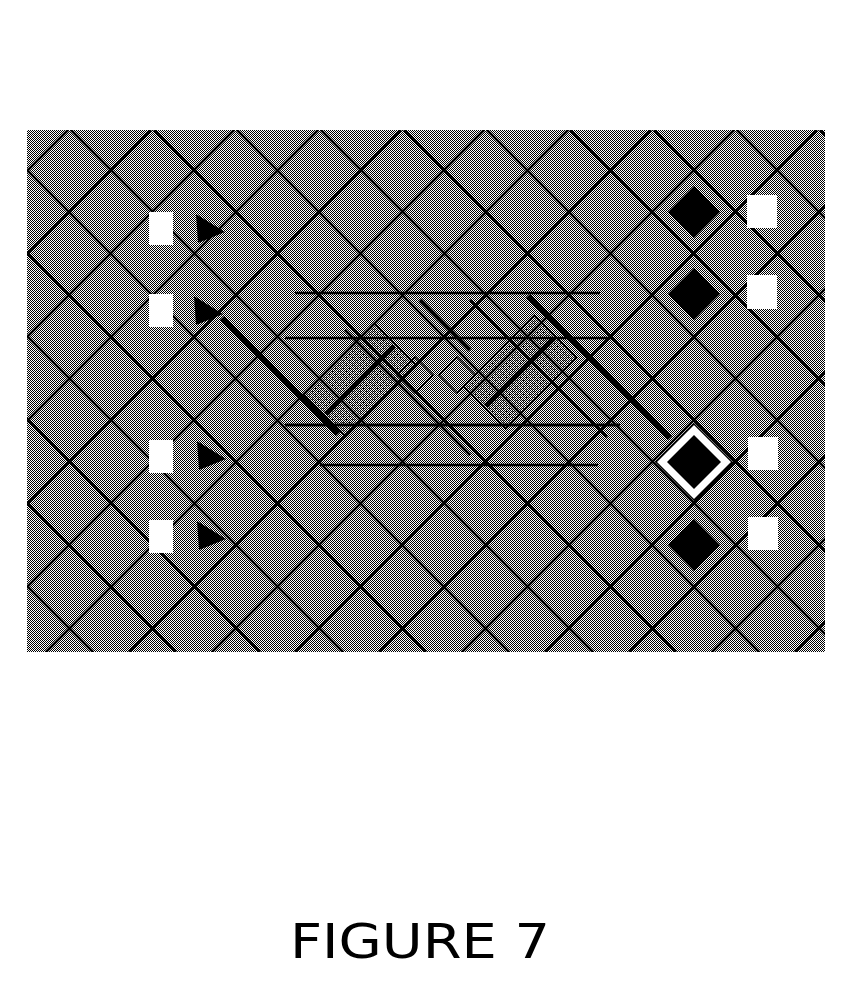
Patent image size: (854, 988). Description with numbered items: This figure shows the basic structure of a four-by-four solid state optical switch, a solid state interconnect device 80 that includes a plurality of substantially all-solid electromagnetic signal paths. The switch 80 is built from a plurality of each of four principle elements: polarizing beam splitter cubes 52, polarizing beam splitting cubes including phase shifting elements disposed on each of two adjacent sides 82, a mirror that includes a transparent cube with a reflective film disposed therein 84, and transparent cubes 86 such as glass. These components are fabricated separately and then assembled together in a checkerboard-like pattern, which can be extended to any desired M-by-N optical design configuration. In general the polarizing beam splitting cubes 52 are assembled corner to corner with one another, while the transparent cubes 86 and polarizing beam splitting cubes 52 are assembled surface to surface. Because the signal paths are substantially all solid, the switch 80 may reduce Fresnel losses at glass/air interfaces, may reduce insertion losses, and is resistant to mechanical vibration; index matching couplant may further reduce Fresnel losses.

The solid state interconnect device 80 is at (419, 89).
The polarizing beam splitter cube 52 is at (311, 425).
The polarizing beam splitting cube including phase shifting elements 82 is at (515, 467).
The mirror 84 is at (545, 432).
The transparent cube 86 is at (548, 380).